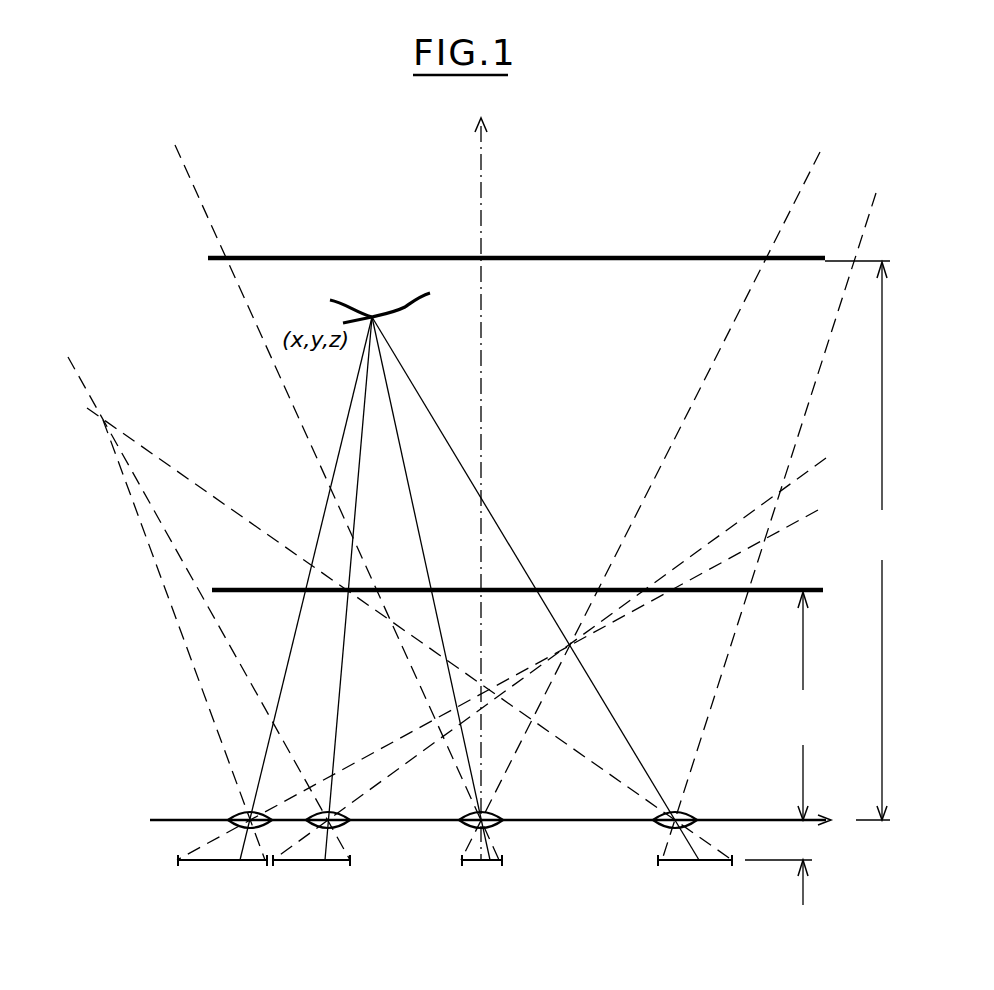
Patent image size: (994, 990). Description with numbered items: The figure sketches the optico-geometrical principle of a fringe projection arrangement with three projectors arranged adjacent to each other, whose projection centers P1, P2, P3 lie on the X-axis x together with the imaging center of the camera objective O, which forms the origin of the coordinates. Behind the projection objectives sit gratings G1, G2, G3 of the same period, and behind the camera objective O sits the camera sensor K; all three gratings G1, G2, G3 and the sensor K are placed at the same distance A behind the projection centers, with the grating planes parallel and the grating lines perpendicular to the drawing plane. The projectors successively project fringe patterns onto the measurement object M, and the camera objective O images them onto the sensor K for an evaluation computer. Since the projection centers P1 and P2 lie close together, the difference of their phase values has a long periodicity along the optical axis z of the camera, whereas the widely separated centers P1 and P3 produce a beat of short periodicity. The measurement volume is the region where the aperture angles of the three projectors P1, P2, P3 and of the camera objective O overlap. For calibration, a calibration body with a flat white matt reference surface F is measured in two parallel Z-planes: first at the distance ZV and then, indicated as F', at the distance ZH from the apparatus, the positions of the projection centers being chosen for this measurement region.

The projection center of first projector P1 is at (240, 812).
The projection center of second projector P2 is at (352, 815).
The projection center of third projector P3 is at (686, 814).
The camera objective O is at (498, 814).
The camera sensor K is at (477, 866).
The first grating G1 is at (223, 866).
The second grating G2 is at (313, 866).
The third grating G3 is at (683, 866).
The reference surface F is at (517, 563).
The reference surface in second position F' is at (549, 287).
The measurement object M is at (408, 306).
The distance of second reference plane ZH is at (875, 541).
The distance of first reference plane ZV is at (806, 706).
The distance behind projection centers A is at (778, 867).
The X-axis x is at (520, 820).
The optical axis of the camera z is at (487, 479).